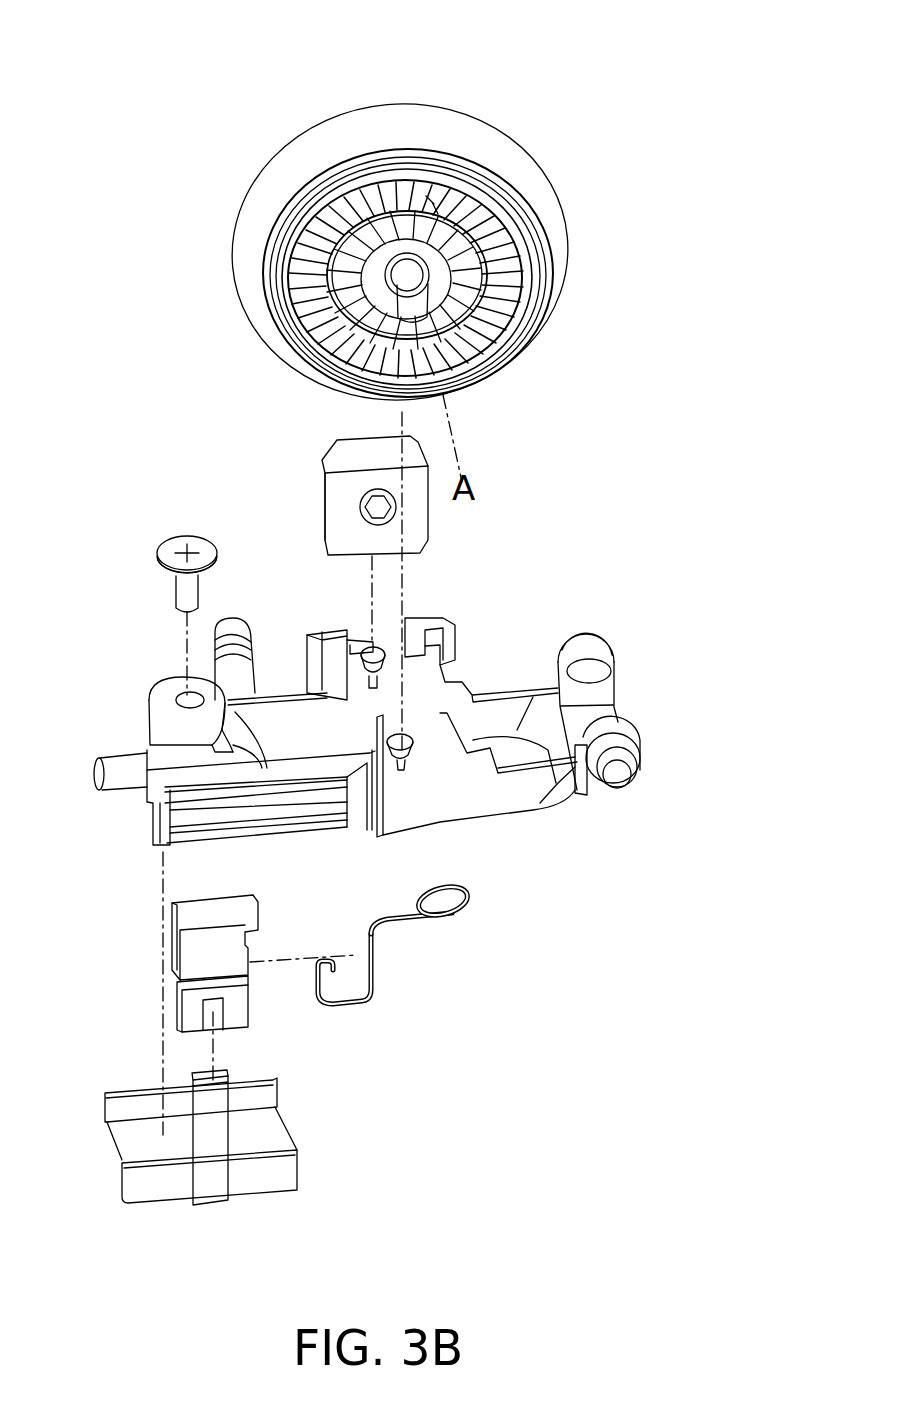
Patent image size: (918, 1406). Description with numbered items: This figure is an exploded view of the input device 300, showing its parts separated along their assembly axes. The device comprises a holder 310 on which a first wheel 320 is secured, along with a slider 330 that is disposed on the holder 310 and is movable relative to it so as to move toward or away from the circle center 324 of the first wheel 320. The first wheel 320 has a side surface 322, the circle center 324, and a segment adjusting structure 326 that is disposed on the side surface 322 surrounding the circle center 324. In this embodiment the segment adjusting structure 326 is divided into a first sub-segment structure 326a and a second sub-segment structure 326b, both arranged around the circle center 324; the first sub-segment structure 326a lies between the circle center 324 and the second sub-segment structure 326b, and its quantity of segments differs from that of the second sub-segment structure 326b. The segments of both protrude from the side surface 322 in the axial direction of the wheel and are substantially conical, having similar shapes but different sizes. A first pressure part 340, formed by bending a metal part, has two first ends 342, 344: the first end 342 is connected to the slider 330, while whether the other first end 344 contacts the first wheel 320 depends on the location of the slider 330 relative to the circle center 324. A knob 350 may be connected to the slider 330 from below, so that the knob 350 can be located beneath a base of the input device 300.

The input device 300 is at (599, 108).
The holder 310 is at (510, 793).
The first wheel 320 is at (439, 207).
The side surface 322 is at (334, 201).
The circle center 324 is at (404, 278).
The segment adjusting structure 326 is at (432, 174).
The first sub-segment structure 326a is at (458, 232).
The second sub-segment structure 326b is at (431, 216).
The slider 330 is at (200, 958).
The first pressure part 340 is at (394, 1018).
The first end 342 is at (345, 1006).
The first end 344 is at (468, 925).
The knob 350 is at (158, 1192).